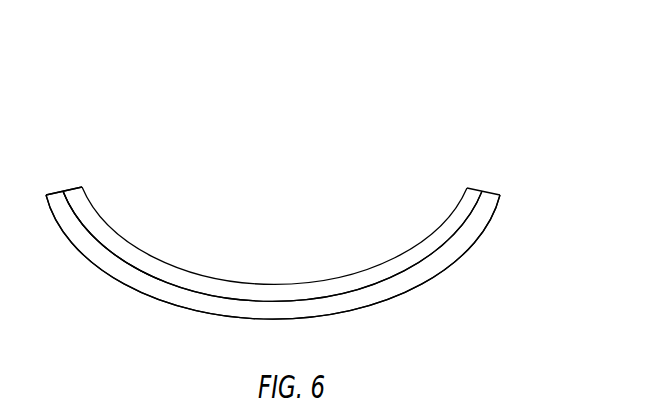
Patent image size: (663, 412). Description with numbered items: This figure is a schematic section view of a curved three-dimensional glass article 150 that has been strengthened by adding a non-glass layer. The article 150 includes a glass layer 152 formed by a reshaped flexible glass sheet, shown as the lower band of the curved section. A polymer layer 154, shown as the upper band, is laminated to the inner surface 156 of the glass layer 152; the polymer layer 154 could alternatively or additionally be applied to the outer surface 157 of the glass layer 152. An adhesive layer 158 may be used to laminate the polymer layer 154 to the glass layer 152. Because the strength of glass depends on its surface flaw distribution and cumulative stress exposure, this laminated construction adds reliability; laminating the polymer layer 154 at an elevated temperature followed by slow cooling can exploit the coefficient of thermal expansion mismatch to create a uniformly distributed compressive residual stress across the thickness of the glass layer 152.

The 3D glass article 150 is at (462, 133).
The glass layer 152 is at (440, 265).
The polymer layer 154 is at (400, 257).
The inner surface 156 is at (288, 303).
The outer surface 157 is at (378, 305).
The adhesive layer 158 is at (140, 273).